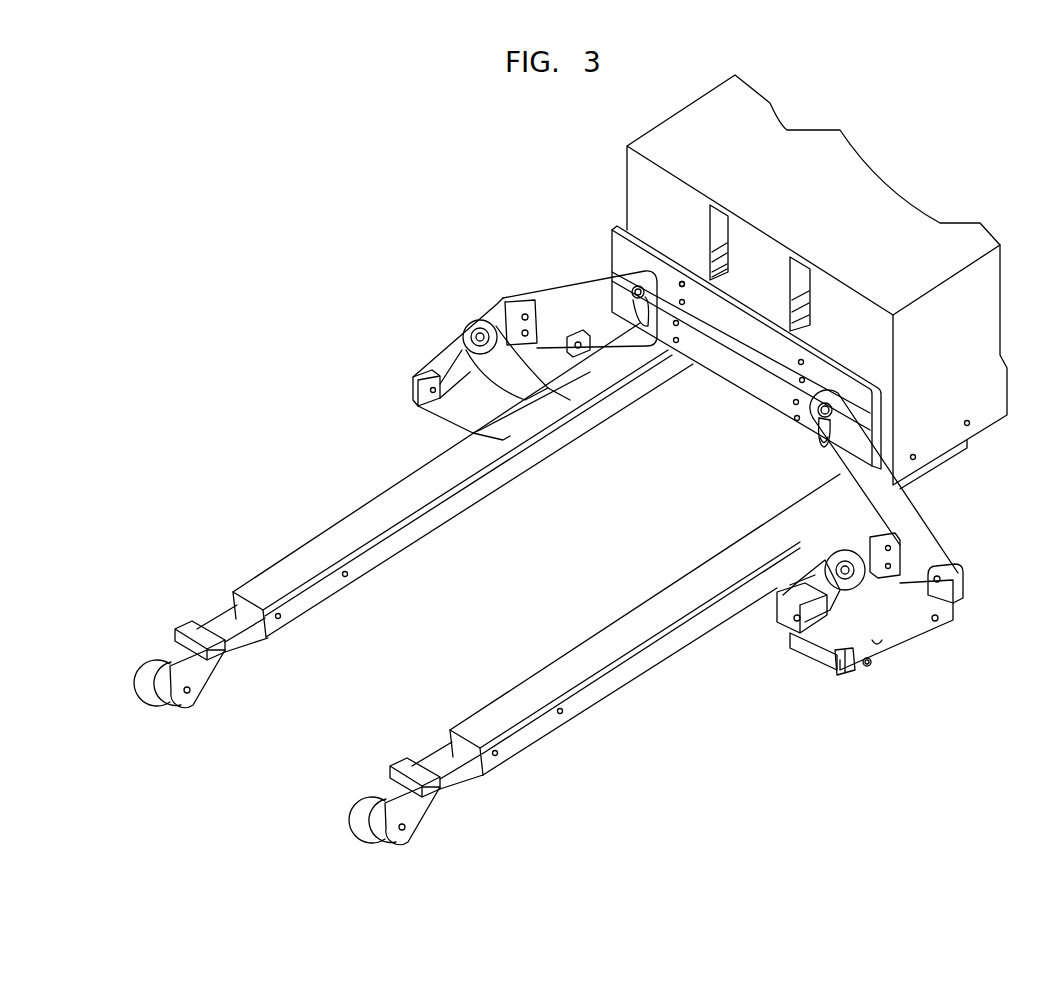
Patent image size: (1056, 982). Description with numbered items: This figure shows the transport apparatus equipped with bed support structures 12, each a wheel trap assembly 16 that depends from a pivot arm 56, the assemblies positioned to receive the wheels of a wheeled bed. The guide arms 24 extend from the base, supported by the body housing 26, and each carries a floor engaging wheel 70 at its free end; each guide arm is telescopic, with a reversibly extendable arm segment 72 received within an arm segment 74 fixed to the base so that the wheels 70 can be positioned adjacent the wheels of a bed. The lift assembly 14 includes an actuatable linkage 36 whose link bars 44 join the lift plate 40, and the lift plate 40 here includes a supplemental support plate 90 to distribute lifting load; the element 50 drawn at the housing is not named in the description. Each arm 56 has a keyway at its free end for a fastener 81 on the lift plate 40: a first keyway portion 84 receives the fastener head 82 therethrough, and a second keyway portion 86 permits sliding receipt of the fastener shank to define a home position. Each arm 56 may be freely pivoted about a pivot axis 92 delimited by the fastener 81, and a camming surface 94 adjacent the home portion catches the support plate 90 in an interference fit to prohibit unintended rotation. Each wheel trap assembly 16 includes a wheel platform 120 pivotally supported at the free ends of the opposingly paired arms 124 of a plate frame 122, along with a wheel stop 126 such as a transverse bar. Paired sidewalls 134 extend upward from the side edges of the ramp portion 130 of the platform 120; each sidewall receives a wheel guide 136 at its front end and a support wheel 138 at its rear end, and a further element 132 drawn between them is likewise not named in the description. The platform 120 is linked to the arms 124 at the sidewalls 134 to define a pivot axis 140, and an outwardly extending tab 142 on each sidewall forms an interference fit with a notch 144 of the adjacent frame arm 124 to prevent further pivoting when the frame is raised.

The bed support structure 12 is at (528, 342).
The lift assembly 14 is at (728, 327).
The wheel trap assembly 16 is at (874, 637).
The guide arm 24 is at (487, 584).
The body housing 26 is at (745, 115).
The linkage 36 is at (718, 283).
The lift plate 40 is at (640, 269).
The link bar 44 is at (800, 330).
The slot 50 is at (800, 273).
The arm 56 is at (553, 290).
The floor engaging wheel 70 is at (170, 713).
The extendable arm segment 72 is at (223, 617).
The fixed arm segment 74 is at (297, 560).
The fastener 81 is at (631, 291).
The fastener head 82 is at (633, 302).
The first keyway portion 84 is at (821, 446).
The second keyway portion 86 is at (830, 430).
The supplemental support plate 90 is at (788, 409).
The pivot axis 92 is at (819, 430).
The camming surface 94 is at (678, 265).
The wheel platform 120 is at (834, 646).
The plate frame 122 is at (936, 607).
The frame arm 124 is at (925, 635).
The wheel stop 126 is at (940, 563).
The ramp portion 130 is at (785, 637).
The shaft 132 is at (815, 652).
The sidewall 134 is at (847, 673).
The wheel guide 136 is at (802, 608).
The support wheel 138 is at (840, 560).
The pivot axis 140 is at (867, 665).
The tab 142 is at (857, 677).
The notch 144 is at (878, 641).